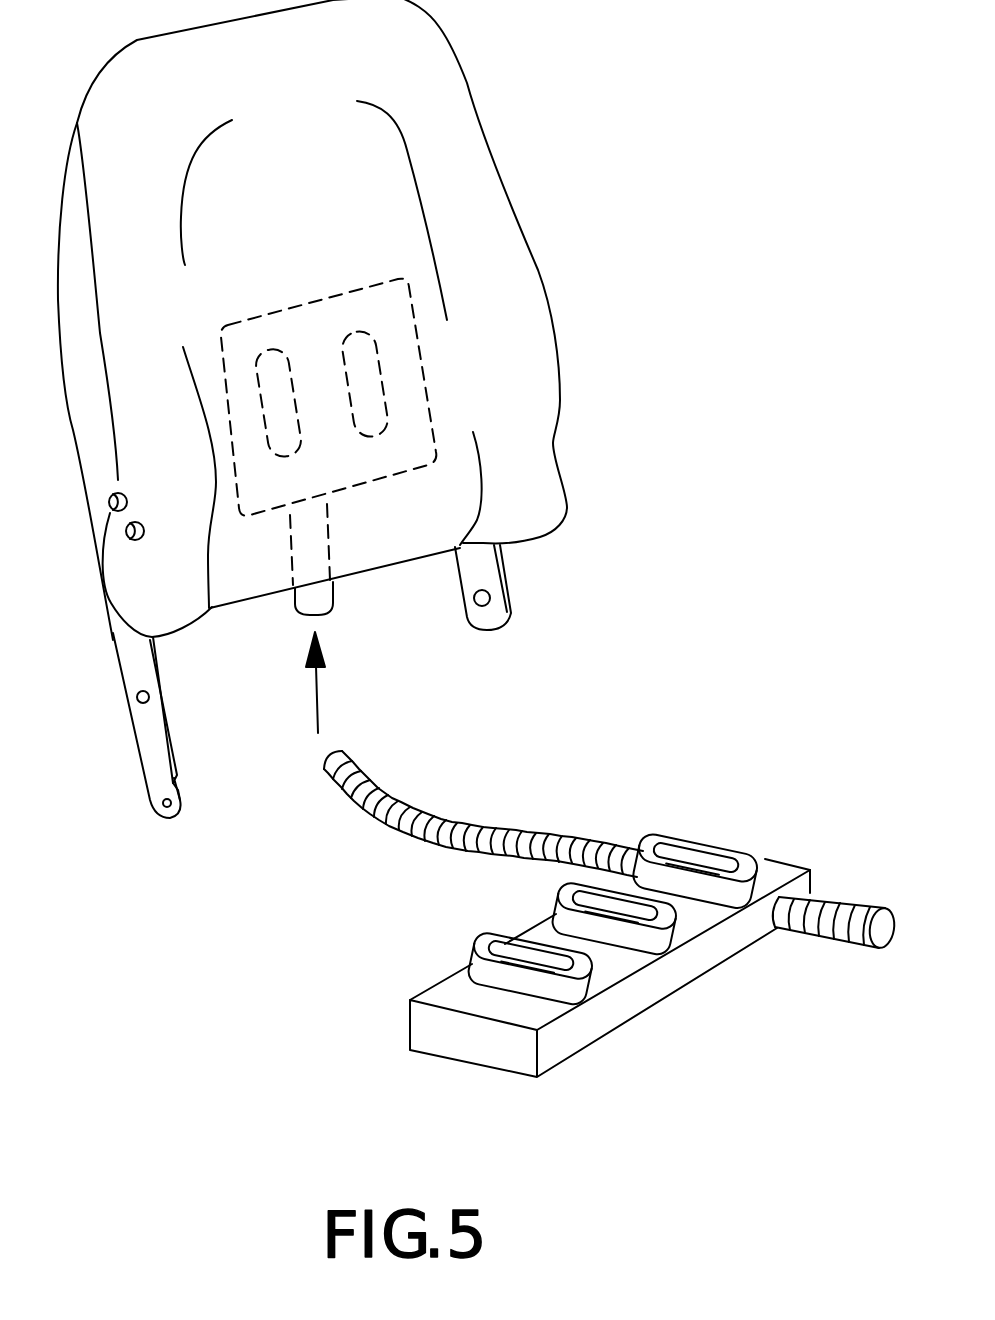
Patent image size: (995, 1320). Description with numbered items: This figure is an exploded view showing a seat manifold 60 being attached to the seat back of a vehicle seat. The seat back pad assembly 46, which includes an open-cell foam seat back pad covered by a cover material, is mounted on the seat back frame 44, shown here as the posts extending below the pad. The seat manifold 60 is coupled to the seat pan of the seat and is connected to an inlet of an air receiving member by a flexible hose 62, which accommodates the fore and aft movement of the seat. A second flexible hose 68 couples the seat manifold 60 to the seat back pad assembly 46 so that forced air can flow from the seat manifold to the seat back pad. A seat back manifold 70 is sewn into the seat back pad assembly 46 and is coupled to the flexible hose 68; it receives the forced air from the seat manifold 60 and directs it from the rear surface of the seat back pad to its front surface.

The seat back frame 44 is at (140, 722).
The seat back pad assembly 46 is at (470, 230).
The seat manifold 60 is at (610, 1020).
The flexible hose 62 is at (847, 940).
The flexible hose 68 is at (567, 832).
The seat back manifold 70 is at (410, 397).